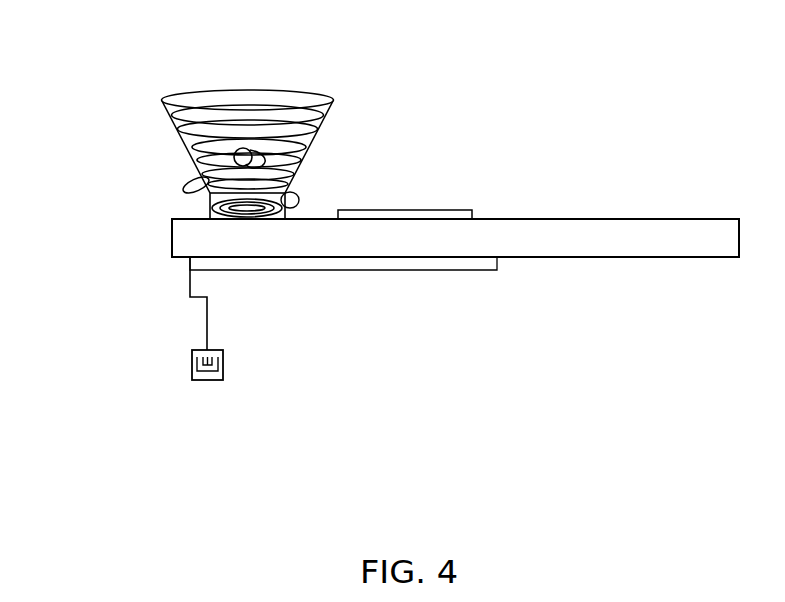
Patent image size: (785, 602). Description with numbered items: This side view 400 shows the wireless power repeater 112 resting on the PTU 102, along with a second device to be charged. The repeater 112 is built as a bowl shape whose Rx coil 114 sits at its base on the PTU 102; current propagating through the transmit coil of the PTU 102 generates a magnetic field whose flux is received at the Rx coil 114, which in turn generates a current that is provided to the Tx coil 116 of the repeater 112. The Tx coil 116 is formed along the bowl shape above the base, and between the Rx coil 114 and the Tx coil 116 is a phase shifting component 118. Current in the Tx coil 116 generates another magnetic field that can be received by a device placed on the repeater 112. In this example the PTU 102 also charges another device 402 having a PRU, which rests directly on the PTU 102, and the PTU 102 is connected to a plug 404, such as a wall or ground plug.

The side view 400 is at (389, 537).
The PTU 102 is at (385, 270).
The device 402 is at (397, 209).
The connector 404 is at (192, 362).
The wireless power repeater 112 is at (114, 110).
The Tx coil 116 is at (173, 110).
The phase shifting component 118 is at (205, 182).
The Rx coil 114 is at (208, 210).